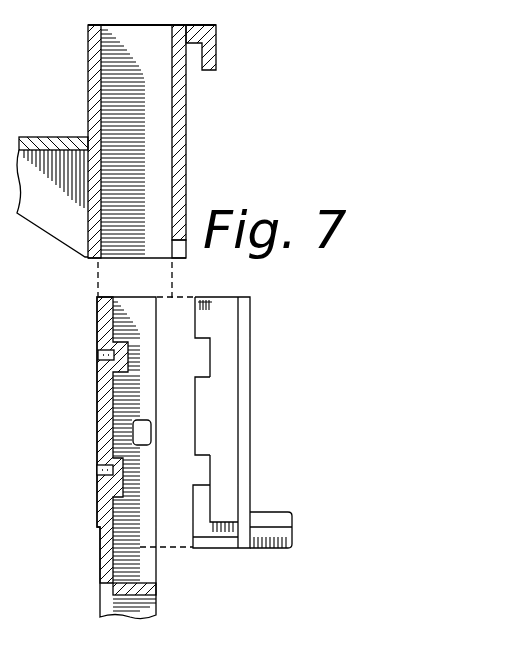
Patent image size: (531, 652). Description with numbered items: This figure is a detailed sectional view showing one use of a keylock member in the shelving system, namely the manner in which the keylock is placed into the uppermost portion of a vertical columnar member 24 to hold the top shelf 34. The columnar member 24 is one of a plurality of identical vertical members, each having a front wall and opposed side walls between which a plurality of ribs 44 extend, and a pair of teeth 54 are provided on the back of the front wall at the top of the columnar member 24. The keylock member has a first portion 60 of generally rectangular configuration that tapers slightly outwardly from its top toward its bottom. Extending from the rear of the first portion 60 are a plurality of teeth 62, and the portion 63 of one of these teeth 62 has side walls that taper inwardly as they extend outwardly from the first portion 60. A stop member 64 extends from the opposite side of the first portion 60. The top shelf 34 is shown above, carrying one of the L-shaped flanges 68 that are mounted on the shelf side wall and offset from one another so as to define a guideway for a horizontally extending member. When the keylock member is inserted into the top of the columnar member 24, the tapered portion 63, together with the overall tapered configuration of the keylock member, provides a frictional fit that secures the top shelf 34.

The vertical columnar member 24 is at (88, 596).
The top shelf 34 is at (57, 134).
The ribs 44 is at (156, 588).
The teeth 54 is at (120, 364).
The first portion 60 is at (250, 417).
The teeth 62 is at (197, 380).
The tapered tooth portion 63 is at (218, 549).
The stop member 64 is at (293, 525).
The L-shaped flanges 68 is at (205, 25).